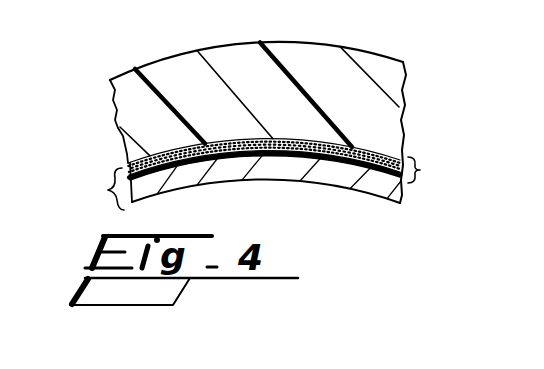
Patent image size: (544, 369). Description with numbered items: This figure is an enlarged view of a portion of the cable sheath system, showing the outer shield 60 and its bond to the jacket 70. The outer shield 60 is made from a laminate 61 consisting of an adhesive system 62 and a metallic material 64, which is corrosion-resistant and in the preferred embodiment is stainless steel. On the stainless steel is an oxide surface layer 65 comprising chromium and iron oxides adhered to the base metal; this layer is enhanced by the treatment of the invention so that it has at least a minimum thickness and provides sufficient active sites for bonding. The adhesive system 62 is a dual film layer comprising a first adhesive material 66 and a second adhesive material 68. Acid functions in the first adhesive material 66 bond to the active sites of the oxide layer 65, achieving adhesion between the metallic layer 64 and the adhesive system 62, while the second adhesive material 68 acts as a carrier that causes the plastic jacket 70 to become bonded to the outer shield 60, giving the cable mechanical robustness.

The outer shield 60 is at (401, 208).
The laminate 61 is at (110, 183).
The adhesive system 62 is at (421, 167).
The metallic material 64 is at (340, 180).
The oxide surface layer 65 is at (278, 160).
The first adhesive material 66 is at (295, 147).
The second adhesive material 68 is at (327, 143).
The jacket 70 is at (383, 63).